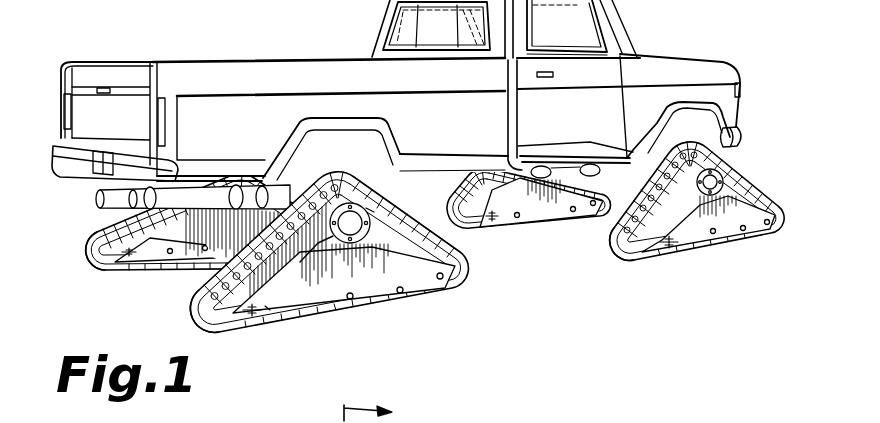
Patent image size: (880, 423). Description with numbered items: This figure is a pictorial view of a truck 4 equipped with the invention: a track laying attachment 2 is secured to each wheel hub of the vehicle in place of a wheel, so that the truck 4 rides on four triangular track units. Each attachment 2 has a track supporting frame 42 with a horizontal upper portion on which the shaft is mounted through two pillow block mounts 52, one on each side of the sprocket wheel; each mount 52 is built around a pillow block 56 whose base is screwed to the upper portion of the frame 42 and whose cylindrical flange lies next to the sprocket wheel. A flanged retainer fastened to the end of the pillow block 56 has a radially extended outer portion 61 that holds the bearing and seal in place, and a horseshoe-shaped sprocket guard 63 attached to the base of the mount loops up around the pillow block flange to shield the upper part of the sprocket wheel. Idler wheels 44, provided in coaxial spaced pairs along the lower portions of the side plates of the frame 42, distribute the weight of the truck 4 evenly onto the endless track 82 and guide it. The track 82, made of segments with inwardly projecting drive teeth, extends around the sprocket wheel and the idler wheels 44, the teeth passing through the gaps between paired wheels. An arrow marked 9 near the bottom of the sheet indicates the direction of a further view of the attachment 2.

The truck 4 is at (648, 56).
The track laying attachment 2 is at (563, 232).
The track 82 is at (94, 270).
The track supporting frame 42 is at (700, 227).
The idler wheels 44 is at (745, 240).
The pillow block mount 52 is at (329, 265).
The pillow block 56 is at (322, 290).
The outer portion of flanged retainer 61 is at (366, 243).
The sprocket guard 63 is at (372, 207).
The section view direction 9 is at (380, 414).